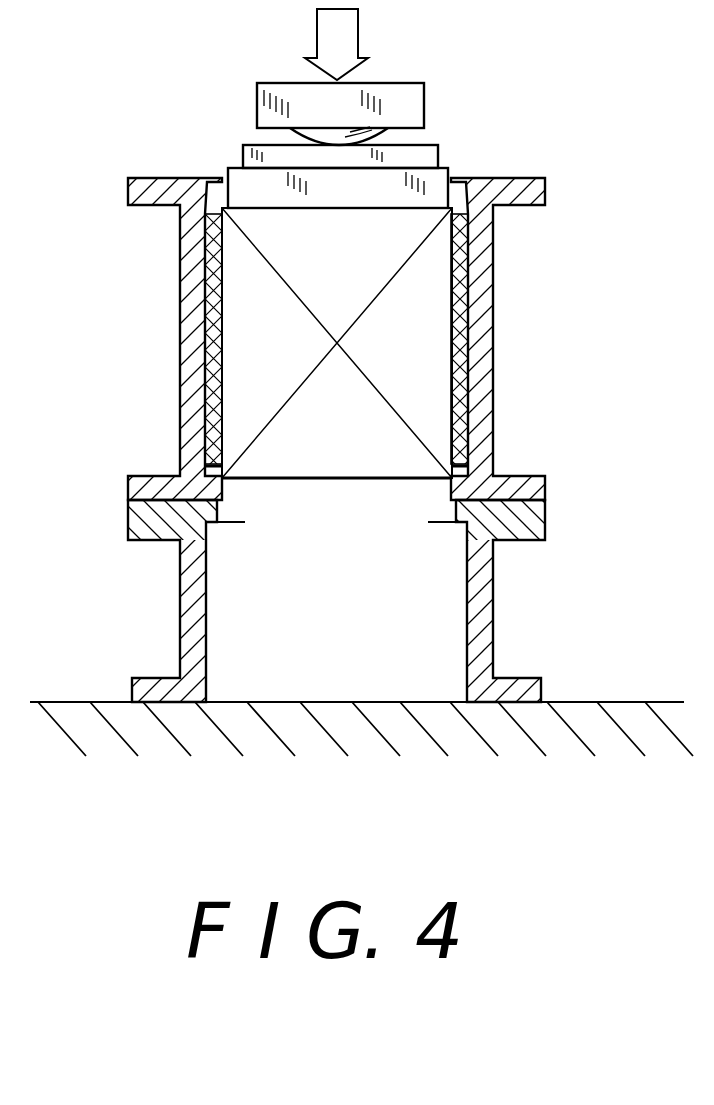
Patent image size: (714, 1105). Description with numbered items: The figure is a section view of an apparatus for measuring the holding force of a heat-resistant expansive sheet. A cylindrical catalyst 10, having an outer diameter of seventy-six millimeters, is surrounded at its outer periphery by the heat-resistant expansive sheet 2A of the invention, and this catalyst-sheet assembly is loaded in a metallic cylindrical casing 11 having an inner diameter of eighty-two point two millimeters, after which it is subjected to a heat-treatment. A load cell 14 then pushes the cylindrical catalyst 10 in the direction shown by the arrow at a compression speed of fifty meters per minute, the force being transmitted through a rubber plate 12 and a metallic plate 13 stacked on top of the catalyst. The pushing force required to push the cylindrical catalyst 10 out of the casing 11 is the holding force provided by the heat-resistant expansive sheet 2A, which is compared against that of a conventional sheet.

The load cell 14 is at (410, 97).
The metallic plate 13 is at (418, 153).
The rubber plate 12 is at (435, 182).
The metallic cylindrical casing 11 is at (485, 260).
The cylindrical catalyst 10 is at (440, 328).
The heat-resistant expansive sheet 2A is at (458, 403).